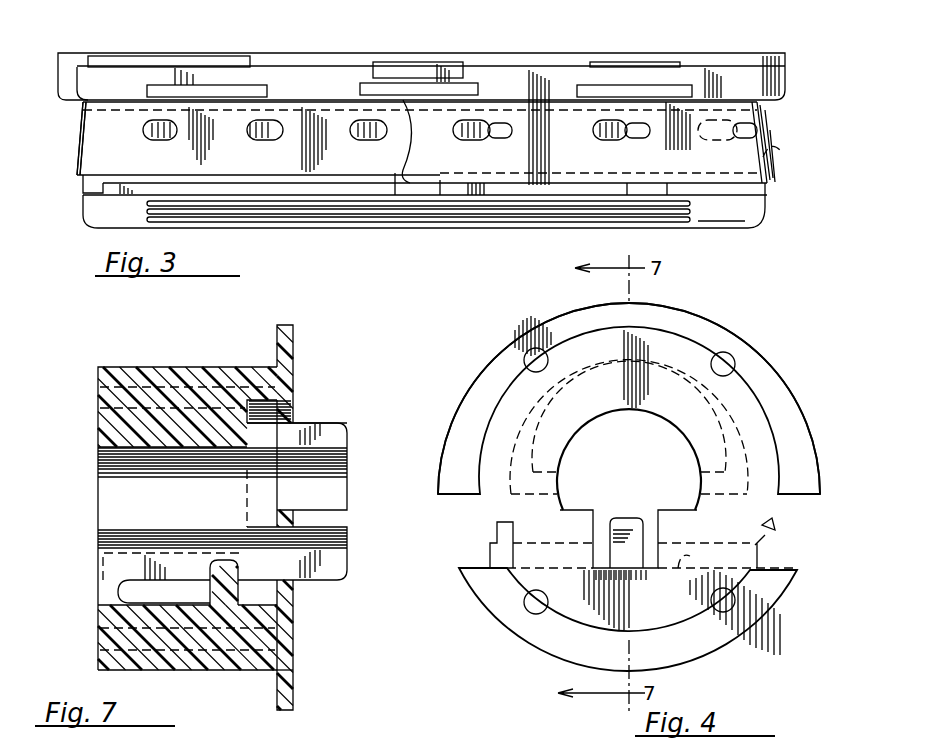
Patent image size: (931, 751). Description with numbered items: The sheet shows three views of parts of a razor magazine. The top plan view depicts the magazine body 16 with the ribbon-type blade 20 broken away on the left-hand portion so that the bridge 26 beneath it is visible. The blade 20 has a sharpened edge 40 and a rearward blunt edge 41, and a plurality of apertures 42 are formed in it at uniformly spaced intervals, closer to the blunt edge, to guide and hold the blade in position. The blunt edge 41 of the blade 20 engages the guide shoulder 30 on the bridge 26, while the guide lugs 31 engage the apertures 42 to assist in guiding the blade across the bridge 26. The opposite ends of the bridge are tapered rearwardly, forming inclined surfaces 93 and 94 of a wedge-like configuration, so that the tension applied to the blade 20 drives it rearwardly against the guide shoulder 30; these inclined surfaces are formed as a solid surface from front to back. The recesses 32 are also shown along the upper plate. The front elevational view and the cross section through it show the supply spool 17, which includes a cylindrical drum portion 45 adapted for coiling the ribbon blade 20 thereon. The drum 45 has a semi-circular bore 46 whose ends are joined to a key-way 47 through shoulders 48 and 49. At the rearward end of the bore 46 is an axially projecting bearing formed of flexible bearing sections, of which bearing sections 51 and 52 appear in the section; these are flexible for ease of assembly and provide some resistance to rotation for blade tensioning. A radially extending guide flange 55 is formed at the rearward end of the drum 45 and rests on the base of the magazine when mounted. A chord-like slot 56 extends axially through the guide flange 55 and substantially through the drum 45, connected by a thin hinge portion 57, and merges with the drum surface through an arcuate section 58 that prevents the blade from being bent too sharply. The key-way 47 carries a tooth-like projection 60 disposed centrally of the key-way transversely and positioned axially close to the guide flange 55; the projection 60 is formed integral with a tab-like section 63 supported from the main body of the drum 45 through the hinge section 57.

In FIG. 3, the magazine body 16 is at (68, 118).
In FIG. 7, the supply spool 17 is at (320, 397).
In FIG. 4, the supply spool 17 is at (738, 316).
In FIG. 3, the ribbon-type blade 20 is at (571, 165).
In FIG. 3, the bridge 26 is at (386, 163).
In FIG. 3, the guide shoulder 30 is at (716, 108).
In FIG. 3, the guide lugs 31 is at (265, 125).
In FIG. 3, the recess 32 is at (158, 88).
In FIG. 3, the sharpened edge 40 is at (493, 183).
In FIG. 3, the blunt edge 41 is at (545, 100).
In FIG. 3, the apertures 42 is at (498, 133).
In FIG. 7, the cylindrical drum portion 45 is at (134, 362).
In FIG. 4, the cylindrical drum portion 45 is at (750, 386).
In FIG. 7, the semi-circular bore 46 is at (105, 452).
In FIG. 4, the semi-circular bore 46 is at (580, 418).
In FIG. 7, the key-way 47 is at (103, 572).
In FIG. 4, the key-way 47 is at (604, 522).
In FIG. 4, the shoulder 48 is at (673, 510).
In FIG. 4, the shoulder 49 is at (572, 516).
In FIG. 7, the bearing section 51 is at (338, 445).
In FIG. 7, the bearing section 52 is at (347, 557).
In FIG. 7, the guide flange 55 is at (288, 650).
In FIG. 4, the guide flange 55 is at (688, 306).
In FIG. 4, the chord-like slot 56 is at (681, 568).
In FIG. 4, the hinge portion 57 is at (513, 553).
In FIG. 4, the arcuate section 58 is at (772, 527).
In FIG. 7, the tooth-like projection 60 is at (240, 590).
In FIG. 4, the tooth-like projection 60 is at (636, 528).
In FIG. 7, the tab-like section 63 is at (290, 623).
In FIG. 3, the inclined surface 93 is at (781, 156).
In FIG. 3, the inclined surface 94 is at (80, 142).